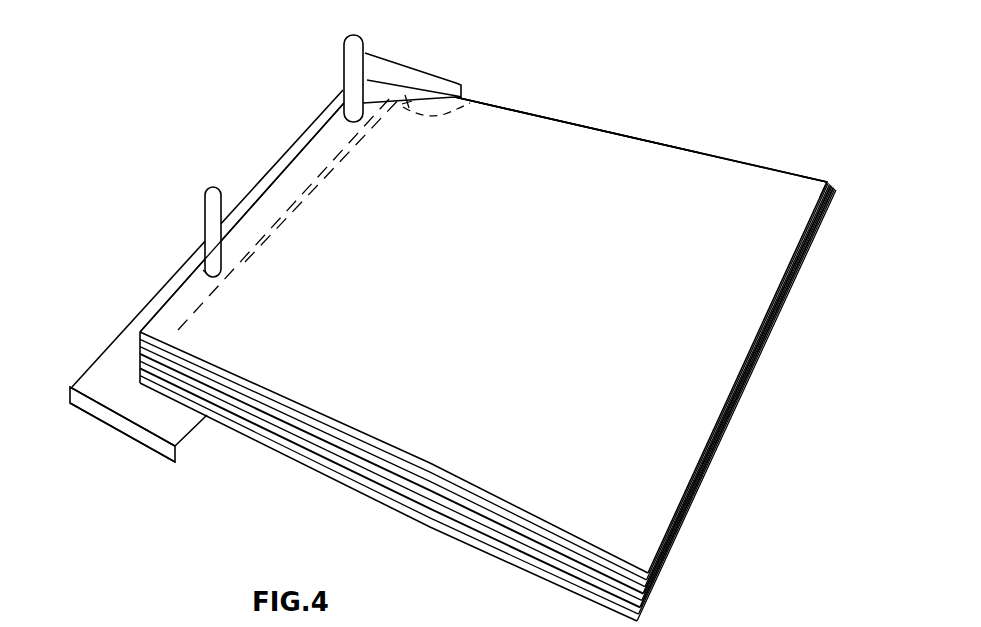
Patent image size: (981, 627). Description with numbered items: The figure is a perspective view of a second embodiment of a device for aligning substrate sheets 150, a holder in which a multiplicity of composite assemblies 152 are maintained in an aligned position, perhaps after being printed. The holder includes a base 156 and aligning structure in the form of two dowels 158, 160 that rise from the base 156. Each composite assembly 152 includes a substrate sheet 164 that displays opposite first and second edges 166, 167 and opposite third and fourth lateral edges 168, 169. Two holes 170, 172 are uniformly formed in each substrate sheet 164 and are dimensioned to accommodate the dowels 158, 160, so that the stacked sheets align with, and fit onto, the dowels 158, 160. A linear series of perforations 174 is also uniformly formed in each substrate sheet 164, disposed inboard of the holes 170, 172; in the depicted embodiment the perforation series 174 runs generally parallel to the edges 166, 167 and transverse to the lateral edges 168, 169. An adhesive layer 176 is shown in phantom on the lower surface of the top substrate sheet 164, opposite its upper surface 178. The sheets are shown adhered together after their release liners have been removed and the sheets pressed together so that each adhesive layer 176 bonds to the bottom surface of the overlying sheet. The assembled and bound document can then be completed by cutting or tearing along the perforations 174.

The device for aligning substrate sheets 150 is at (88, 414).
The composite assemblies 152 is at (350, 472).
The base 156 is at (163, 458).
The dowel 158 is at (205, 198).
The dowel 160 is at (344, 46).
The substrate sheet 164 is at (723, 153).
The first edge 166 is at (283, 207).
The second edge 167 is at (827, 182).
The third edge 168 is at (600, 132).
The fourth edge 169 is at (403, 513).
The hole 170 is at (203, 270).
The hole 172 is at (343, 108).
The linear series of perforations 174 is at (263, 188).
The adhesive layer 176 is at (470, 103).
The upper surface 178 is at (482, 285).